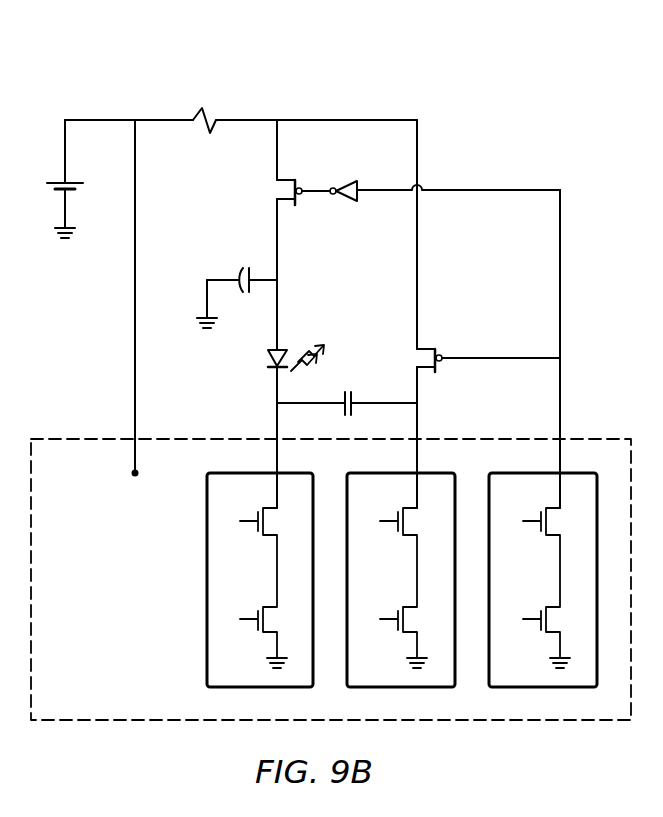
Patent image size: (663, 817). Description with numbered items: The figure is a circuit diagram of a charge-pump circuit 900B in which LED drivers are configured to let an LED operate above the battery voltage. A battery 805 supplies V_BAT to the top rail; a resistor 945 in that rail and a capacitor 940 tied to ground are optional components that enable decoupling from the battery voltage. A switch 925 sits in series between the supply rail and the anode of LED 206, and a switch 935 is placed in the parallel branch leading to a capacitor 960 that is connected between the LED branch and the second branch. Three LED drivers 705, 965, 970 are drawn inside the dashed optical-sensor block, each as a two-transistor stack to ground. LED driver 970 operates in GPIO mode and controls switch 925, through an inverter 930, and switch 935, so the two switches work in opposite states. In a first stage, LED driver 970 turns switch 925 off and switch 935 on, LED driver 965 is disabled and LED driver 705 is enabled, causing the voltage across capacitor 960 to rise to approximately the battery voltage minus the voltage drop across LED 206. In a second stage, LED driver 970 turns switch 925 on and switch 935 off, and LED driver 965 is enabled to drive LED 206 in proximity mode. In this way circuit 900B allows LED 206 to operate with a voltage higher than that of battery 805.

The circuit 900B is at (520, 88).
The resistor 945 is at (202, 108).
The battery 805 is at (52, 181).
The switch 925 is at (291, 205).
The inverter 930 is at (339, 185).
The capacitor 940 is at (242, 266).
The LED 206 is at (269, 348).
The capacitor 960 is at (346, 390).
The switch 935 is at (436, 346).
The LED driver 705 is at (253, 498).
The LED driver 965 is at (393, 498).
The LED driver 970 is at (535, 498).